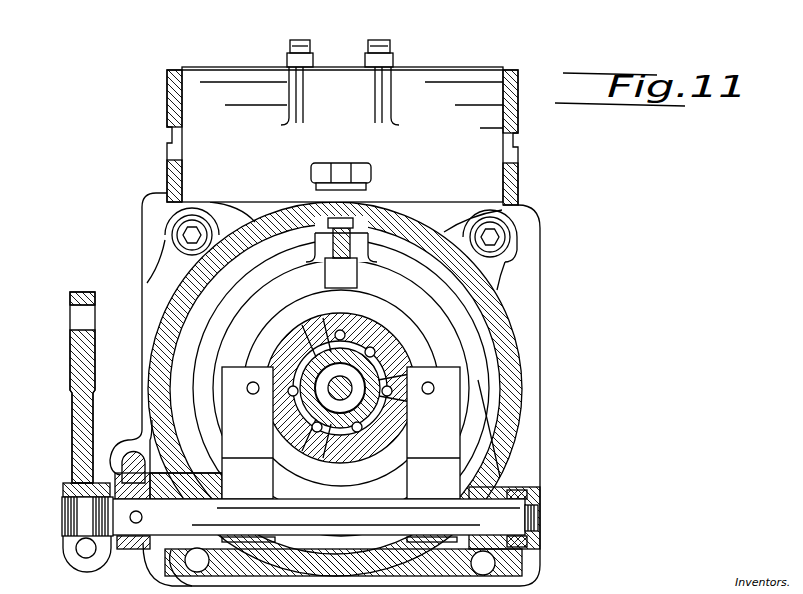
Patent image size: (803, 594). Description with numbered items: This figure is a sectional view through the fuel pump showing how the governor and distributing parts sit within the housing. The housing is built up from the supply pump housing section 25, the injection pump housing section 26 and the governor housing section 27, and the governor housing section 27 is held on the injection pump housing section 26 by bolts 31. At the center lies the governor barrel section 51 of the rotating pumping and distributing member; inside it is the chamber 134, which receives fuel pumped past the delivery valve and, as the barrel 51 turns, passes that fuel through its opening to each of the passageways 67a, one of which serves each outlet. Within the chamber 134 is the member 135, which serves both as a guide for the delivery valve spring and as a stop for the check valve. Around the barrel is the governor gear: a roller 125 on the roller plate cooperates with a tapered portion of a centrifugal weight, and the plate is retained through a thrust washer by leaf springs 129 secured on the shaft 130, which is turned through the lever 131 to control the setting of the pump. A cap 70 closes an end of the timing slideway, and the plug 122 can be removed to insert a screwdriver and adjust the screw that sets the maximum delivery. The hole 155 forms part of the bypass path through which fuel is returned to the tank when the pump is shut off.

The supply pump housing section 25 is at (527, 238).
The injection pump housing section 26 is at (447, 87).
The governor housing section 27 is at (493, 290).
The bolts 31 is at (200, 217).
The governor barrel section 51 is at (305, 367).
The passageways 67a is at (330, 352).
The caps 70 is at (172, 90).
The plug 122 is at (343, 173).
The roller 125 is at (365, 243).
The leaf springs 129 is at (573, 370).
The shaft 130 is at (530, 497).
The lever 131 is at (80, 367).
The chamber 134 is at (305, 430).
The member 135 is at (323, 393).
The hole 155 is at (355, 326).